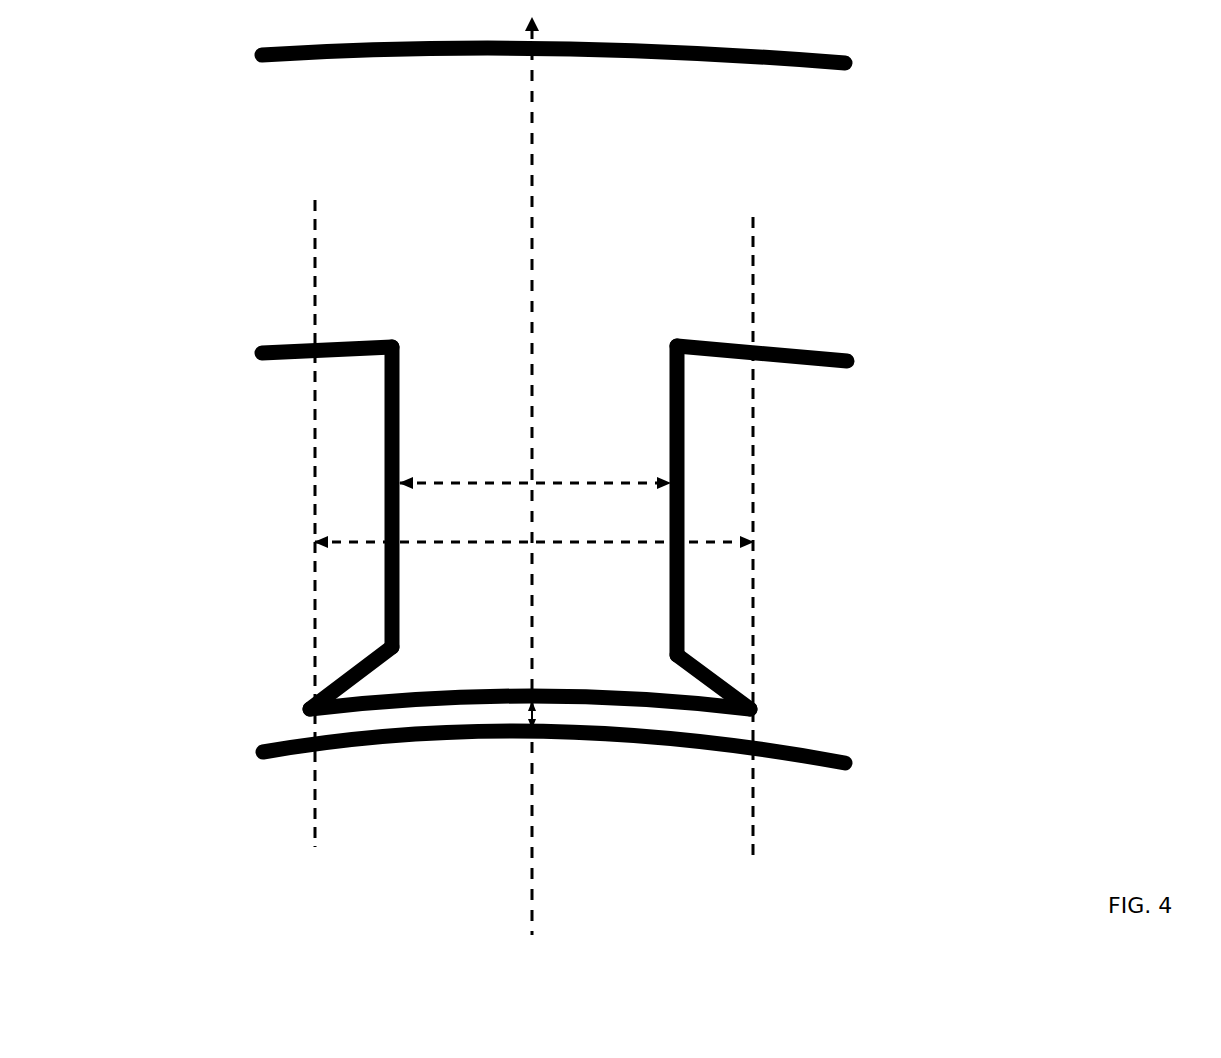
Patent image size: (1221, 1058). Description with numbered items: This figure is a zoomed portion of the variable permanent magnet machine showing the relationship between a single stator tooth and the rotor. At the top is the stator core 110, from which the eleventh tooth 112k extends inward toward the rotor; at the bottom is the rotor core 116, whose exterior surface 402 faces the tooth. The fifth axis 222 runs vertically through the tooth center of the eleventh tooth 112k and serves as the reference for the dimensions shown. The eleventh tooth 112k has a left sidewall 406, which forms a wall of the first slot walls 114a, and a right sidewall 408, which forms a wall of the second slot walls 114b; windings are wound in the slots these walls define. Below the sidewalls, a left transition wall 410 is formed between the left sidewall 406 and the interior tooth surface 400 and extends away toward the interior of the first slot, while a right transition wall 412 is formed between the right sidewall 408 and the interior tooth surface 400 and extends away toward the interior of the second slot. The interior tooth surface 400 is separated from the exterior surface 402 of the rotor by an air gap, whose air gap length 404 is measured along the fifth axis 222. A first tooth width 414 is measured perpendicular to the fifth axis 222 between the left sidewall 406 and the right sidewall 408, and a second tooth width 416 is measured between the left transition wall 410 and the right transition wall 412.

The fifth axis 222 is at (531, 85).
The stator core 110 is at (665, 123).
The rotor core 116 is at (554, 736).
The exterior surface 402 is at (282, 741).
The eleventh tooth 112k is at (554, 513).
The first slot walls 114a is at (342, 338).
The second slot walls 114b is at (723, 342).
The left sidewall 406 is at (402, 398).
The right sidewall 408 is at (668, 380).
The left transition wall 410 is at (355, 668).
The right transition wall 412 is at (709, 670).
The interior tooth surface 400 is at (378, 711).
The air gap length 404 is at (537, 718).
The first tooth width 414 is at (467, 482).
The second tooth width 416 is at (458, 547).